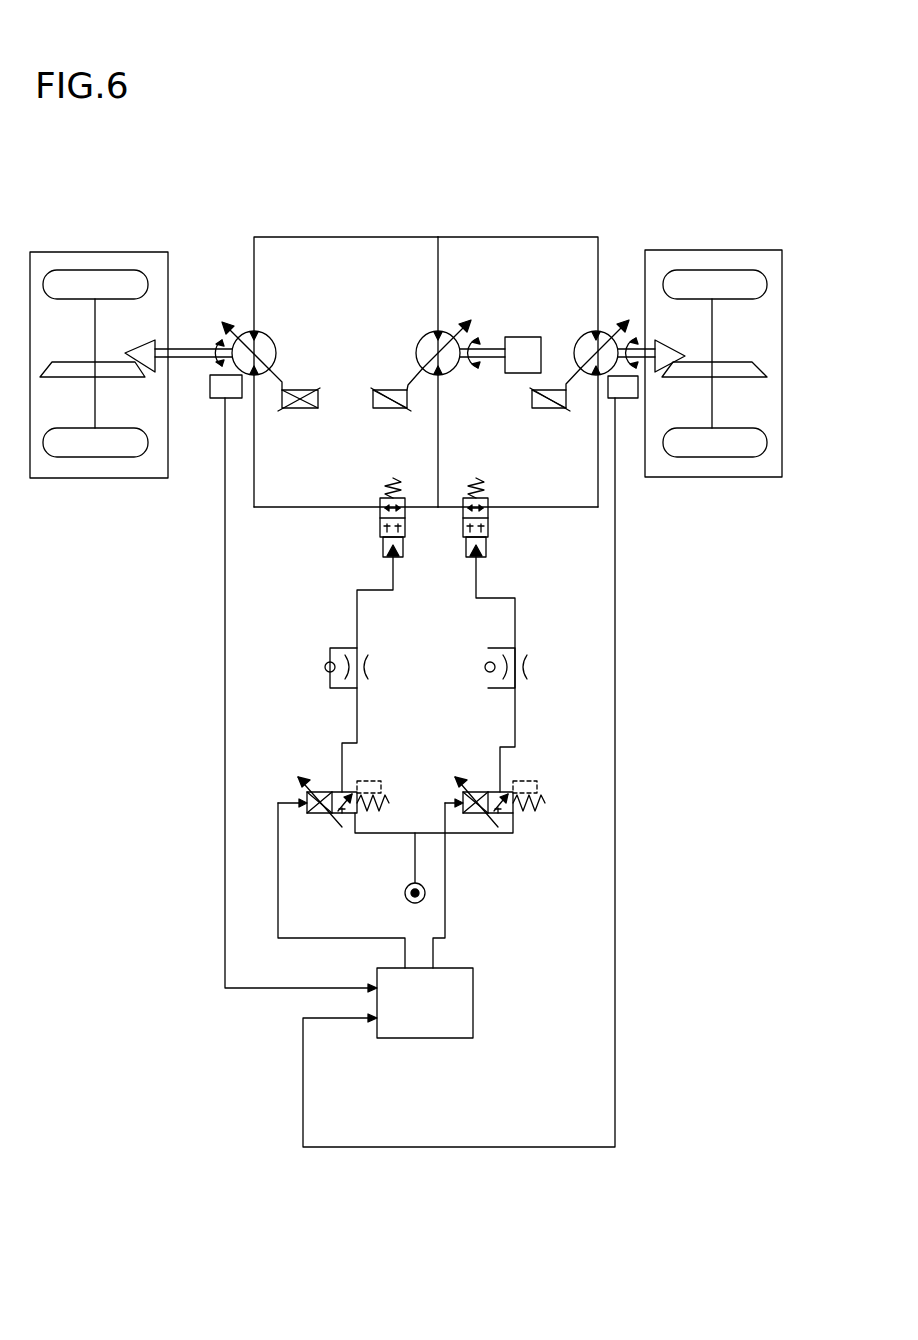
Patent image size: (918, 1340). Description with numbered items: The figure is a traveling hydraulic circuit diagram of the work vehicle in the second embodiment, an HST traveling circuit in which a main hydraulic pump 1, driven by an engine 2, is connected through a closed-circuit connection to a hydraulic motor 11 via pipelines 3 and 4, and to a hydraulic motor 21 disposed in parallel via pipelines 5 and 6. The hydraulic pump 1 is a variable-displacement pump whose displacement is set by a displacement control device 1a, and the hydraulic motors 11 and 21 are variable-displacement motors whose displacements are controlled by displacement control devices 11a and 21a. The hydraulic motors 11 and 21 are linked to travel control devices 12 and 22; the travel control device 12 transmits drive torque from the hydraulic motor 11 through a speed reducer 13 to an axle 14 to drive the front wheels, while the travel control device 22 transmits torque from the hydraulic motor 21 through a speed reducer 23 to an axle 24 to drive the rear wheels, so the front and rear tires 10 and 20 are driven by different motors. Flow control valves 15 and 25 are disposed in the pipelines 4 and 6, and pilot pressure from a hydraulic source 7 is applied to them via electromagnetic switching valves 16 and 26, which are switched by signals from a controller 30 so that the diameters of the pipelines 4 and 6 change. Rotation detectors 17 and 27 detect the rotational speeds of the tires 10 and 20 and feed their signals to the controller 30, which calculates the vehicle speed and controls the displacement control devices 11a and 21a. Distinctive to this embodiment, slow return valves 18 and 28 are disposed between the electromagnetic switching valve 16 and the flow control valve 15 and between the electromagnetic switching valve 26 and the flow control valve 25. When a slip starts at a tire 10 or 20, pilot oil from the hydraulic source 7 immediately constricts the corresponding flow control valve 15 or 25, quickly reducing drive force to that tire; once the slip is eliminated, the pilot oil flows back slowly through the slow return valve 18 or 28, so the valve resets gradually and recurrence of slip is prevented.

The main hydraulic pump 1 is at (422, 333).
The displacement control device 1a is at (392, 410).
The engine 2 is at (517, 337).
The pipeline 3 is at (317, 237).
The pipeline 4 is at (293, 510).
The pipeline 5 is at (518, 237).
The pipeline 6 is at (528, 510).
The hydraulic source 7 is at (404, 894).
The tire 10 is at (72, 272).
The hydraulic motor 11 is at (274, 340).
The displacement control device 11a is at (305, 409).
The travel control device 12 is at (60, 479).
The speed reducer 13 is at (137, 352).
The axle 14 is at (92, 332).
The flow control valve 15 is at (380, 530).
The electromagnetic switching valve 16 is at (317, 818).
The rotation detector 17 is at (219, 399).
The slow return valve 18 is at (325, 668).
The tire 20 is at (726, 272).
The hydraulic motor 21 is at (583, 333).
The displacement control device 21a is at (535, 410).
The travel control device 22 is at (700, 479).
The speed reducer 23 is at (680, 352).
The axle 24 is at (715, 330).
The flow control valve 25 is at (460, 530).
The electromagnetic switching valve 26 is at (515, 823).
The rotation detector 27 is at (613, 400).
The slow return valve 28 is at (533, 672).
The controller 30 is at (418, 1038).